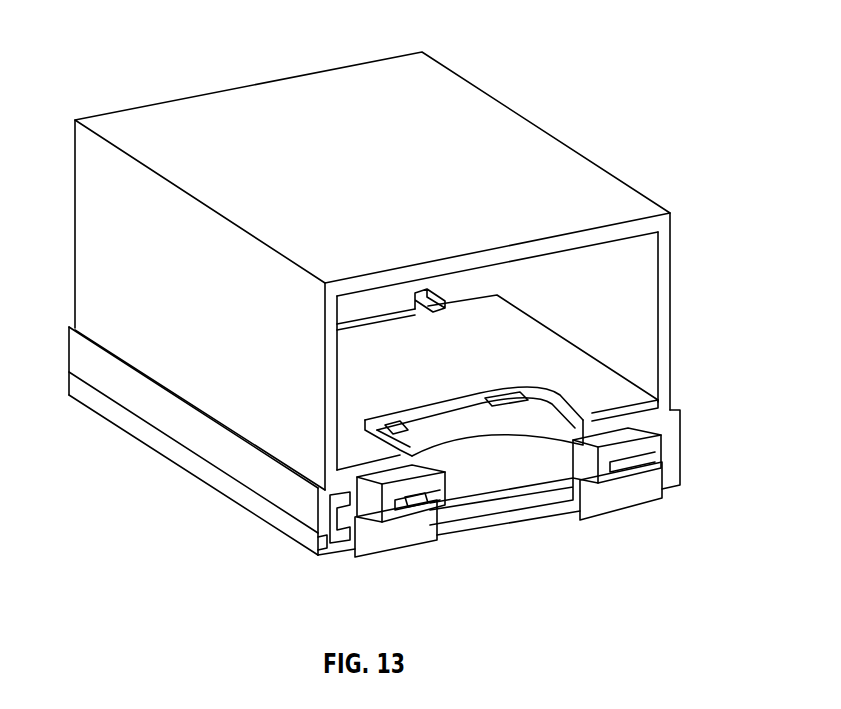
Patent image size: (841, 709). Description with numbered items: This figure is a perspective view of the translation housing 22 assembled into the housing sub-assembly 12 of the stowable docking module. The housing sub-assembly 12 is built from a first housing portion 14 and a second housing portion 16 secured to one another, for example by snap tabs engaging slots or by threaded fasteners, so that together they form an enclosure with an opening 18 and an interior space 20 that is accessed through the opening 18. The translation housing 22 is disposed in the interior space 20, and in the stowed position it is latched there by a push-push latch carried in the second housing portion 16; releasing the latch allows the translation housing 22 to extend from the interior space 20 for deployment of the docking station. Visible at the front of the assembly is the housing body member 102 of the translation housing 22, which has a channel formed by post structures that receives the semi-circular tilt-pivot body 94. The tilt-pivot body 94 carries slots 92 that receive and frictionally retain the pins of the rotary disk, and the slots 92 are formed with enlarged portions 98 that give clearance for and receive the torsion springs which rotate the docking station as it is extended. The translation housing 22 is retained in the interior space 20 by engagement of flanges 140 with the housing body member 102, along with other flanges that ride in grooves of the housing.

The housing sub-assembly 12 is at (612, 107).
The first housing portion 14 is at (470, 80).
The second housing portion 16 is at (152, 437).
The opening 18 is at (649, 303).
The interior space 20 is at (553, 345).
The translation housing 22 is at (626, 390).
The slots 92 is at (395, 513).
The tilt-pivot body 94 is at (655, 440).
The enlarged portions 98 is at (440, 505).
The housing body member 102 is at (493, 480).
The flanges 140 is at (612, 498).